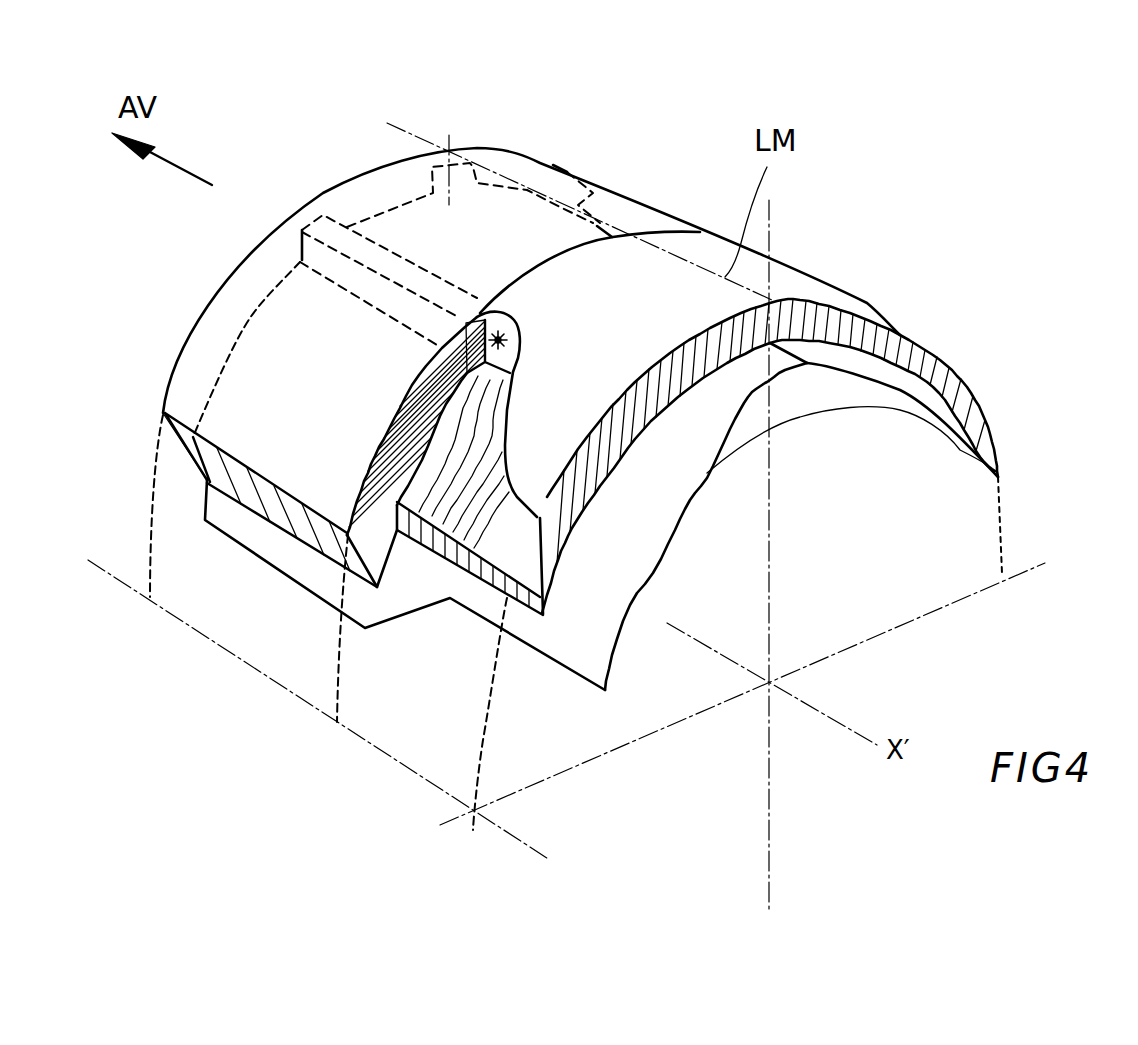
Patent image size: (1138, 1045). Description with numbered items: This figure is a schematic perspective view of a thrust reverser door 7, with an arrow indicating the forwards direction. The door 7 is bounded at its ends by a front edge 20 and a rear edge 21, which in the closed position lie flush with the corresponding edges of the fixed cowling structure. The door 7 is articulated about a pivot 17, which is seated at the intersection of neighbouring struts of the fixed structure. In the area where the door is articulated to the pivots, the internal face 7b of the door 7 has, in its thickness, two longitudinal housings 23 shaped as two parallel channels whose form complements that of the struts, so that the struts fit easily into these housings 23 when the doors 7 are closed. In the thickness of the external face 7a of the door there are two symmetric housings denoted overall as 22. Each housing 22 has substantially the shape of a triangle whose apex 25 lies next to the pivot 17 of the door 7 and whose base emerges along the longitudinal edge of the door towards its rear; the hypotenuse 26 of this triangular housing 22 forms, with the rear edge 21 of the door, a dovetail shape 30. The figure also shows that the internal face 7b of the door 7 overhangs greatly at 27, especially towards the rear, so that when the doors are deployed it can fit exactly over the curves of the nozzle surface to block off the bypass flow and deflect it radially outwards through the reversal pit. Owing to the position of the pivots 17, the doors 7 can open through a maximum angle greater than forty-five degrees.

The front edge 20 is at (317, 195).
The rear edge 21 is at (810, 313).
The housing 22 is at (490, 475).
The longitudinal housing 23 is at (297, 247).
The apex 25 is at (520, 330).
The hypotenuse 26 is at (497, 471).
The overhang 27 is at (655, 507).
The dovetail shape 30 is at (538, 493).
The pivot 17 is at (500, 334).
The door 7 is at (641, 218).
The external face 7a is at (337, 409).
The internal face 7b is at (247, 325).